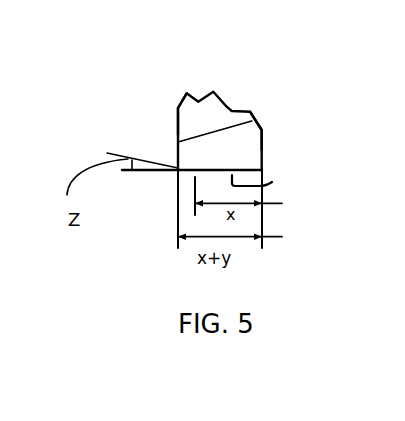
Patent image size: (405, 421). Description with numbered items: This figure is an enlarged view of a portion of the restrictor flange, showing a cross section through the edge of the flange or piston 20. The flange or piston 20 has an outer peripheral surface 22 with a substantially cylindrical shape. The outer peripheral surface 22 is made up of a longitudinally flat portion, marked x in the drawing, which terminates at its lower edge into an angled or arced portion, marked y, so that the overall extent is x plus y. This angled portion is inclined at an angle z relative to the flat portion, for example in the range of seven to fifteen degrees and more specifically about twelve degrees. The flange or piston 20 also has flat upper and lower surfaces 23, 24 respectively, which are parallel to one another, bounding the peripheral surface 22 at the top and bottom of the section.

The flange or piston 20 is at (217, 120).
The outer peripheral surface 22 is at (272, 182).
The upper surface 23 is at (262, 143).
The lower surface 24 is at (178, 121).